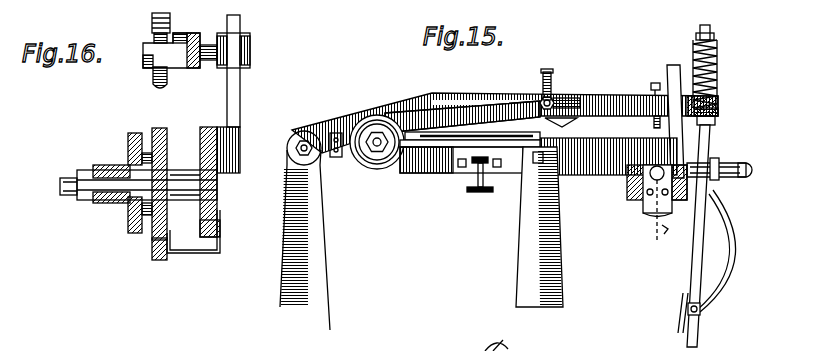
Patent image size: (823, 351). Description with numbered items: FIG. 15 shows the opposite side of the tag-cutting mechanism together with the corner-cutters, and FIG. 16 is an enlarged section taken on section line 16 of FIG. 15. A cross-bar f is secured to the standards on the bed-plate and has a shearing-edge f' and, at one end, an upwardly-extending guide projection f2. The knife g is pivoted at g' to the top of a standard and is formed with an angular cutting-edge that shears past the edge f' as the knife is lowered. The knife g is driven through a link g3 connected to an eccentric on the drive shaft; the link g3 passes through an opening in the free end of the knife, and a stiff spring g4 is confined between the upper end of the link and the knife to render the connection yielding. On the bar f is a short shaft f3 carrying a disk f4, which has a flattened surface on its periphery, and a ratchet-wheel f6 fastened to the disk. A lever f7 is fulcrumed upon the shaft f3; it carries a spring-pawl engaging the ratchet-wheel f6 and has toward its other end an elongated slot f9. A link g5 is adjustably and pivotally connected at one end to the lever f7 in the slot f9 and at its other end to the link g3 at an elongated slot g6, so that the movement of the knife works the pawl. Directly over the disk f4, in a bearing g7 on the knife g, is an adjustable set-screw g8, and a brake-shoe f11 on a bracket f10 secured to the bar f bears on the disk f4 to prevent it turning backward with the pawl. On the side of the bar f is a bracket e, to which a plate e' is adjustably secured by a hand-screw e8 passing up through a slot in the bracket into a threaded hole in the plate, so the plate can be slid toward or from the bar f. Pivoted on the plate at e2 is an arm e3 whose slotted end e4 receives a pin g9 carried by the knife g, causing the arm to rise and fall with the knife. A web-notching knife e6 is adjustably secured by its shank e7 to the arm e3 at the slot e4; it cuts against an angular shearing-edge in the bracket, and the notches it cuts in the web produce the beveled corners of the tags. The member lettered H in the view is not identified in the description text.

In FIG. 16, the adjustable set-screw g8 is at (152, 25).
In FIG. 15, the adjustable set-screw g8 is at (655, 84).
In FIG. 16, the knife g is at (171, 64).
In FIG. 15, the knife g is at (505, 114).
In FIG. 16, the bearing g7 is at (143, 63).
In FIG. 16, the pivot g' is at (238, 50).
In FIG. 15, the pivot g' is at (672, 121).
In FIG. 16, the shearing-edge f' is at (250, 71).
In FIG. 16, the cross-bar f is at (222, 182).
In FIG. 15, the cross-bar f is at (608, 171).
In FIG. 16, the ratchet-wheel f6 is at (130, 142).
In FIG. 16, the disk f4 is at (162, 139).
In FIG. 15, the disk f4 is at (676, 190).
In FIG. 16, the short shaft f3 is at (106, 200).
In FIG. 15, the short shaft f3 is at (641, 196).
In FIG. 16, the lever f7 is at (120, 205).
In FIG. 15, the lever f7 is at (730, 162).
In FIG. 16, the bracket f10 is at (221, 250).
In FIG. 15, the bracket f10 is at (650, 212).
In FIG. 16, the brake-shoe f11 is at (159, 262).
In FIG. 15, the head H is at (604, 33).
In FIG. 15, the arm e3 is at (462, 108).
In FIG. 15, the pin g9 is at (562, 100).
In FIG. 15, the slotted end e4 is at (586, 104).
In FIG. 15, the shank e7 is at (551, 80).
In FIG. 15, the web-notching knife e6 is at (562, 123).
In FIG. 15, the guide projection f2 is at (672, 108).
In FIG. 15, the stiff spring g4 is at (718, 68).
In FIG. 15, the link g3 is at (692, 270).
In FIG. 15, the elongated slot f9 is at (740, 172).
In FIG. 15, the section line 16 is at (656, 219).
In FIG. 15, the link g5 is at (736, 268).
In FIG. 15, the elongated slot g6 is at (700, 320).
In FIG. 15, the pivot e2 is at (380, 158).
In FIG. 15, the plate e' is at (467, 170).
In FIG. 15, the bracket e is at (470, 174).
In FIG. 15, the hand-screw e8 is at (478, 193).